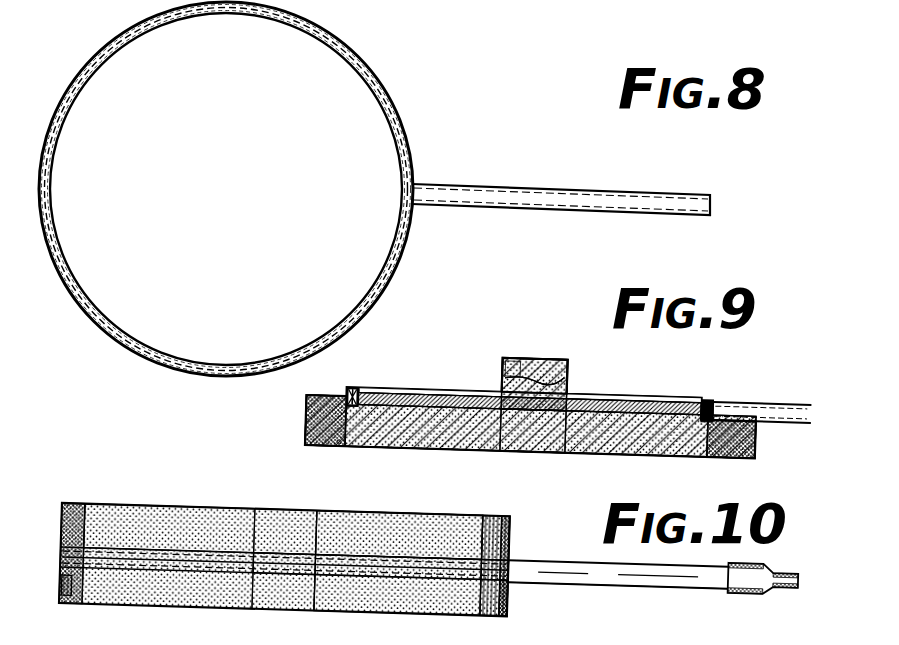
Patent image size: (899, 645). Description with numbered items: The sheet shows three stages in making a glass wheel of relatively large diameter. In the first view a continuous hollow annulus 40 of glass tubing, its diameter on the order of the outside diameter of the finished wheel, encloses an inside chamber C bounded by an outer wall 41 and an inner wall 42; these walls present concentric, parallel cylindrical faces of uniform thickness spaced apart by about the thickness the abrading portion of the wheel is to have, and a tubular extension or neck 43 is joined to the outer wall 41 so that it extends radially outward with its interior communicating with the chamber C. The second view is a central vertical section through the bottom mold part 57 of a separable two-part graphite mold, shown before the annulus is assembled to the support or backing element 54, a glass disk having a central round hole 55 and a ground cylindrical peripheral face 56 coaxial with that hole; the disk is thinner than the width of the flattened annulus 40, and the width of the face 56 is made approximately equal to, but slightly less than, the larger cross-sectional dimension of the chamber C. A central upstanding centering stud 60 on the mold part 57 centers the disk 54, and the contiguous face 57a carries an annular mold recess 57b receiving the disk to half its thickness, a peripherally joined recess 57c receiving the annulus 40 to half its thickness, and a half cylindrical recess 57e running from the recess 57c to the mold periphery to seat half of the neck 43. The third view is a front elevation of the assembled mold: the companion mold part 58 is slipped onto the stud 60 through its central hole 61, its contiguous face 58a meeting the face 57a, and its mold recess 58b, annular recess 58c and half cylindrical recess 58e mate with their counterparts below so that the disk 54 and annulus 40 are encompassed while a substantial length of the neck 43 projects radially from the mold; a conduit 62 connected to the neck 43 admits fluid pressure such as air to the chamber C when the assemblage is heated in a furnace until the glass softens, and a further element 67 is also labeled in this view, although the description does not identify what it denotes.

In FIG. 8, the annulus 40 is at (413, 133).
In FIG. 9, the annulus 40 is at (428, 387).
In FIG. 10, the annulus 40 is at (86, 505).
In FIG. 8, the outer wall 41 is at (383, 93).
In FIG. 9, the outer wall 41 is at (360, 395).
In FIG. 10, the outer wall 41 is at (84, 565).
In FIG. 8, the inner wall 42 is at (353, 86).
In FIG. 9, the inner wall 42 is at (345, 390).
In FIG. 8, the tubular extension or neck 43 is at (515, 194).
In FIG. 9, the tubular extension or neck 43 is at (784, 404).
In FIG. 10, the tubular extension or neck 43 is at (654, 578).
In FIG. 8, the chamber C is at (345, 48).
In FIG. 9, the chamber C is at (352, 392).
In FIG. 9, the support or backing element 54 is at (452, 397).
In FIG. 10, the support or backing element 54 is at (165, 532).
In FIG. 9, the central round hole 55 is at (522, 368).
In FIG. 10, the central round hole 55 is at (266, 530).
In FIG. 9, the peripheral face 56 is at (368, 396).
In FIG. 10, the peripheral face 56 is at (470, 600).
In FIG. 9, the mold part 57 is at (748, 442).
In FIG. 10, the mold part 57 is at (205, 588).
In FIG. 9, the contiguous face 57a is at (305, 395).
In FIG. 10, the contiguous face 57a is at (78, 512).
In FIG. 9, the annular mold recess 57b is at (478, 394).
In FIG. 10, the annular mold recess 57b is at (372, 582).
In FIG. 9, the recess 57c is at (346, 446).
In FIG. 9, the half cylindrical recess 57e is at (725, 455).
In FIG. 10, the half cylindrical recess 57e is at (512, 590).
In FIG. 10, the companion mold part 58 is at (210, 517).
In FIG. 10, the contiguous face 58a is at (66, 585).
In FIG. 10, the mold recess 58b is at (405, 545).
In FIG. 10, the annular recess 58c is at (106, 515).
In FIG. 10, the half cylindrical recess 58e is at (518, 540).
In FIG. 9, the centering stud 60 is at (566, 360).
In FIG. 10, the centering stud 60 is at (302, 525).
In FIG. 10, the central hole 61 is at (324, 530).
In FIG. 10, the conduit 62 is at (782, 580).
In FIG. 10, the handle bottom edge 67 is at (617, 613).